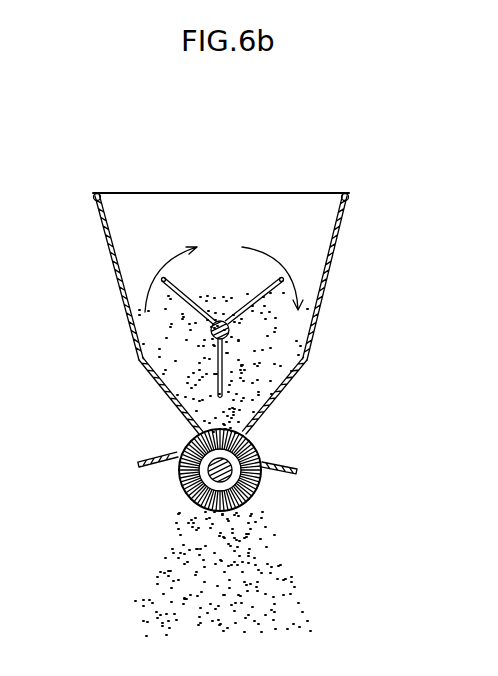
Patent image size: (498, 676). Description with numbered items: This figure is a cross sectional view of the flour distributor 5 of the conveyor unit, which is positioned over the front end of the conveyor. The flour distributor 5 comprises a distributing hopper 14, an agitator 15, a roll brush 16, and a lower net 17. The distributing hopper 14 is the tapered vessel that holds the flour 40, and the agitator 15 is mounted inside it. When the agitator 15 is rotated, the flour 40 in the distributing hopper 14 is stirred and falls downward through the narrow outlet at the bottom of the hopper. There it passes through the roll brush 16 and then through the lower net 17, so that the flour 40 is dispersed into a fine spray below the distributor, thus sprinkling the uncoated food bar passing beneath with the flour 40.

The flour distributor 5 is at (323, 186).
The distributing hopper 14 is at (341, 215).
The agitator 15 is at (263, 308).
The flour 40 is at (275, 370).
The roll brush 16 is at (265, 443).
The lower net 17 is at (258, 512).